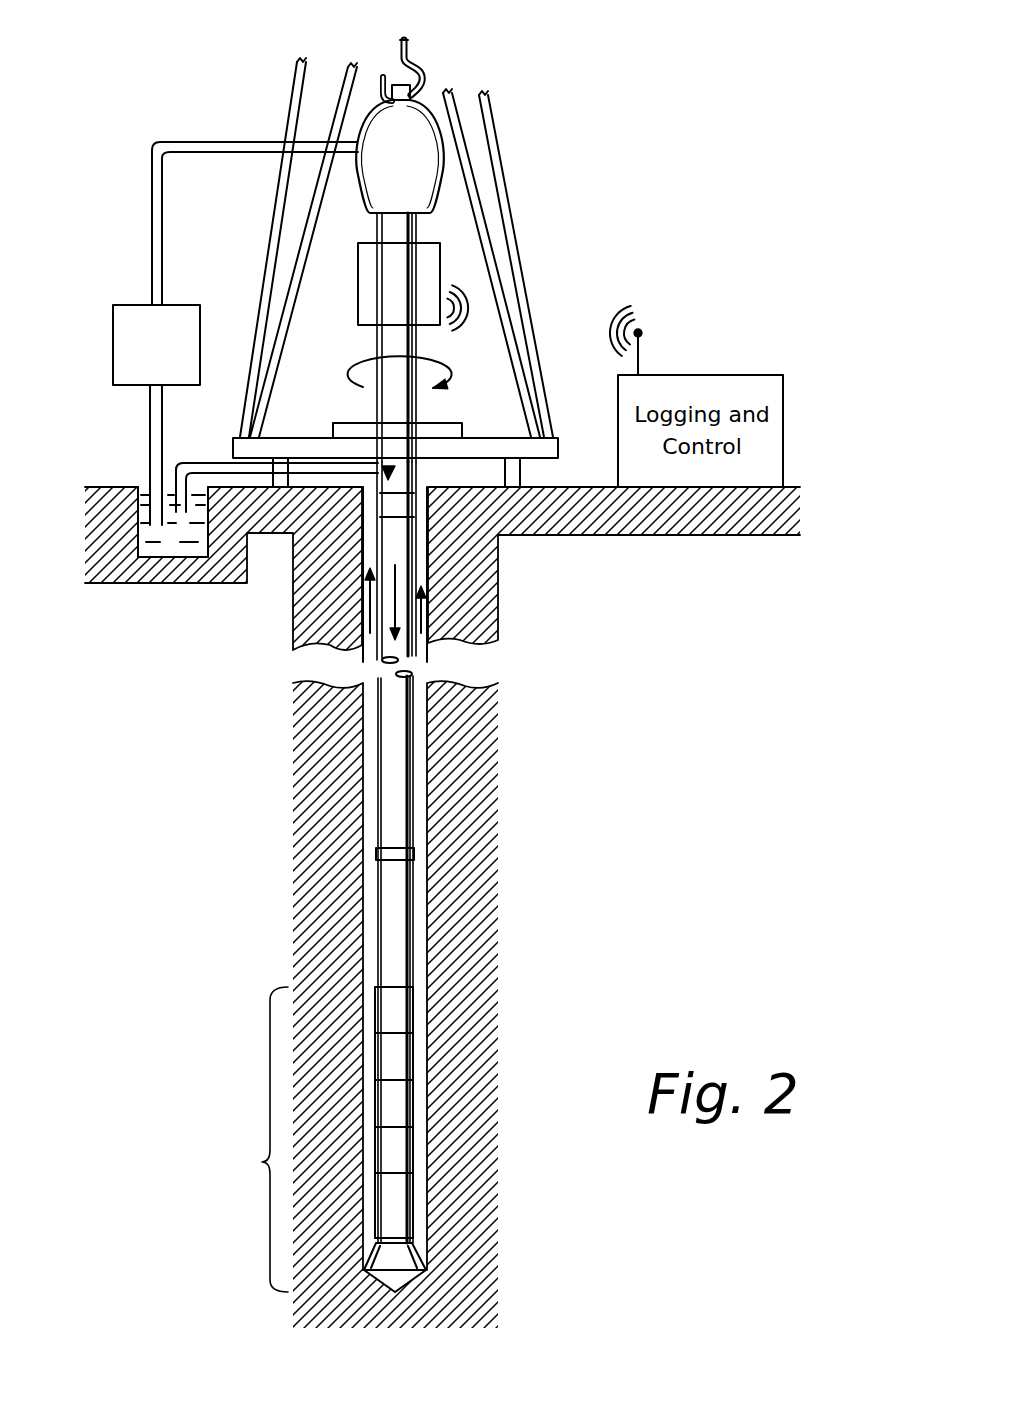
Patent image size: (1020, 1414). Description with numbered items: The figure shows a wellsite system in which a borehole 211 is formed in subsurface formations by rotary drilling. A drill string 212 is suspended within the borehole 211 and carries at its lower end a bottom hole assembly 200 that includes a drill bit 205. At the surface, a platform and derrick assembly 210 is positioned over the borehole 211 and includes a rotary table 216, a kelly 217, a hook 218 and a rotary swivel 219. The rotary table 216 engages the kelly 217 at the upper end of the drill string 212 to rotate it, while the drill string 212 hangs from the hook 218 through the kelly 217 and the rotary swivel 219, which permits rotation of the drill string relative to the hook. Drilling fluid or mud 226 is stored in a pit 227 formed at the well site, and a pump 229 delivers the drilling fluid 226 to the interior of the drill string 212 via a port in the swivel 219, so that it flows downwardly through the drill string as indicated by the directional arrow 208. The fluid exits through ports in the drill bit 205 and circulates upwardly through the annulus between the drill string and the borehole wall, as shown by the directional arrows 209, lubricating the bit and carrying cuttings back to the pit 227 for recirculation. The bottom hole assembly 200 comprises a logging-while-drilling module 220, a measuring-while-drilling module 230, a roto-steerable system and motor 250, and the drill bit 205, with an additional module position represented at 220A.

The bottom hole assembly 200 is at (313, 1139).
The drill bit 205 is at (407, 1262).
The directional arrow 208 is at (378, 622).
The directional arrows 209 is at (365, 618).
The platform and derrick assembly 210 is at (547, 140).
The borehole 211 is at (428, 566).
The drill string 212 is at (388, 468).
The rotary table 216 is at (430, 428).
The kelly 217 is at (388, 337).
The hook 218 is at (402, 52).
The rotary swivel 219 is at (421, 175).
The logging-while-drilling (LWD) module 220 is at (403, 1055).
The LWD and/or MWD module 220A is at (400, 1147).
The drilling fluid or mud 226 is at (168, 553).
The pit 227 is at (136, 473).
The pump 229 is at (113, 379).
The measuring-while-drilling (MWD) module 230 is at (398, 1102).
The roto-steerable system and motor 250 is at (412, 1207).